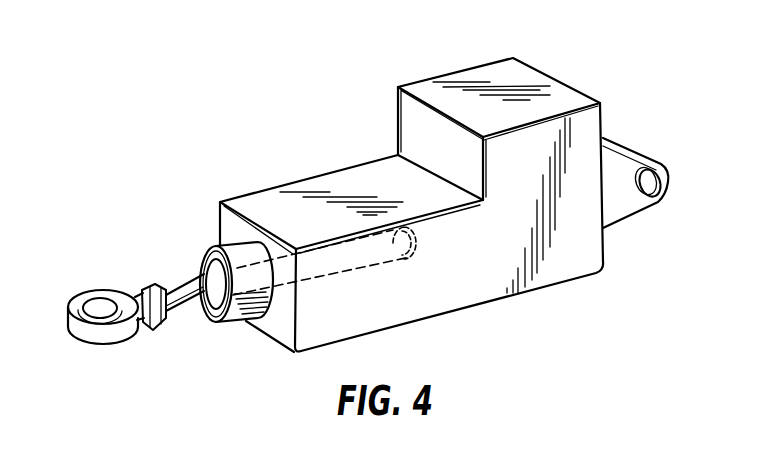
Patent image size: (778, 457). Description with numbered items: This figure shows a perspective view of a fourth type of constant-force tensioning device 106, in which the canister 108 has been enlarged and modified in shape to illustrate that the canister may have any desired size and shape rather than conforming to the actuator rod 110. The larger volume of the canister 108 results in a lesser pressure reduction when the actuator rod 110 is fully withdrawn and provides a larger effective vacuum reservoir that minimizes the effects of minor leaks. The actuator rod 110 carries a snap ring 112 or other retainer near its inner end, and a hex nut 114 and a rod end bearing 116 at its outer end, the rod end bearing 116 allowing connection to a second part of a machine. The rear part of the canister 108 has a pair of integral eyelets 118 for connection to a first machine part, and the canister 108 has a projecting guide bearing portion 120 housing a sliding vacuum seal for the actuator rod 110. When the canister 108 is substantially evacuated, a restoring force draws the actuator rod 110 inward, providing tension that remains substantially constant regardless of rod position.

The tensioning device 106 is at (283, 161).
The canister 108 is at (533, 72).
The actuator rod 110 is at (190, 303).
The snap ring 112 is at (406, 262).
The hex nut 114 is at (152, 287).
The rod end bearing 116 is at (66, 308).
The integral eyelets 118 is at (620, 141).
The guide bearing portion 120 is at (199, 265).